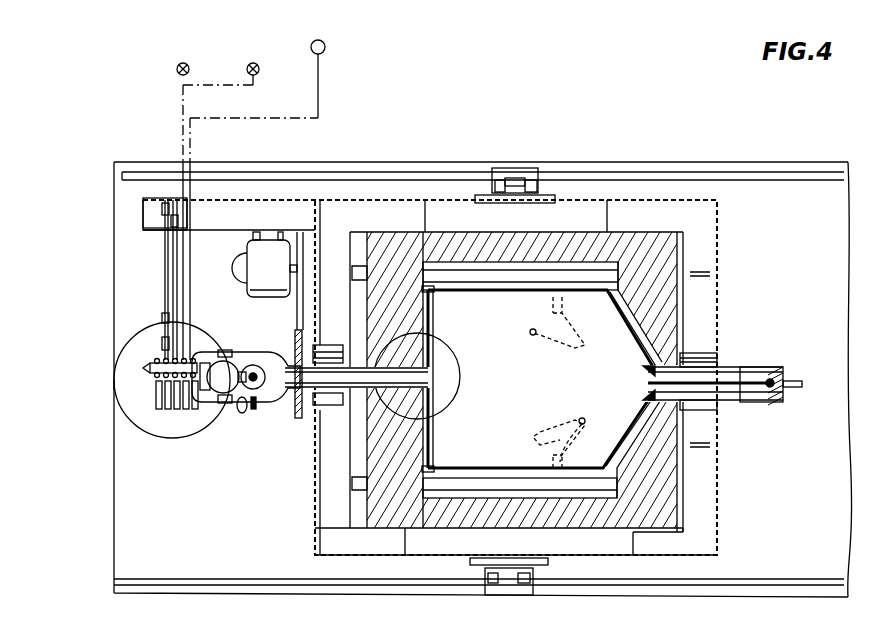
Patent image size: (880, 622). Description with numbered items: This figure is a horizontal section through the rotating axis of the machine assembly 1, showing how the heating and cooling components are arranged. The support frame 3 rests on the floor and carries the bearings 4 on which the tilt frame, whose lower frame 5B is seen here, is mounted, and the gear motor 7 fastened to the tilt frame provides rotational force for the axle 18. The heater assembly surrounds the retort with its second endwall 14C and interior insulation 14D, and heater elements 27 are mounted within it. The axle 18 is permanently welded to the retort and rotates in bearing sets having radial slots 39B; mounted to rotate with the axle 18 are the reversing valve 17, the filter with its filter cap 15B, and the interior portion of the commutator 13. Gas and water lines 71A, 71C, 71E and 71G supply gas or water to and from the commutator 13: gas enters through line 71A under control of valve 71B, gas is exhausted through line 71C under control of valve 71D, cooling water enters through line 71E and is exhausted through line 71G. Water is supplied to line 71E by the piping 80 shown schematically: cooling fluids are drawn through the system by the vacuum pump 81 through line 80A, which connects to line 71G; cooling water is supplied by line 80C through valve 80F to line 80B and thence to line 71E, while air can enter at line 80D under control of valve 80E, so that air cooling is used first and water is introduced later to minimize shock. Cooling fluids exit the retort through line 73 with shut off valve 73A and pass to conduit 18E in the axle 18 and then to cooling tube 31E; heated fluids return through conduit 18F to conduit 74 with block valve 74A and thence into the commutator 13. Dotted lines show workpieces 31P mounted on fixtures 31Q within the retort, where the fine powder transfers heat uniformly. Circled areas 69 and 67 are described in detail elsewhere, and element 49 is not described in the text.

The machine assembly 1 is at (636, 198).
The support frame 3 is at (730, 163).
The bearings 4 is at (524, 180).
The lower frame 5B is at (712, 538).
The gear motor 7 is at (266, 240).
The commutator 13 is at (150, 369).
The second endwall 14C is at (680, 298).
The interior insulation 14D is at (662, 257).
The filter cap 15B is at (217, 392).
The reversing valve 17 is at (262, 402).
The axle 18 is at (372, 352).
The conduit 18E is at (430, 333).
The conduit 18F is at (433, 415).
The heater elements 27 is at (573, 280).
The cooling tube 31E is at (433, 315).
The workpieces 31P is at (562, 422).
The fixtures 31Q is at (584, 420).
The radial slot 39B is at (713, 360).
The bearing housing 49 is at (773, 400).
The circled area 67 is at (388, 420).
The circled area 69 is at (110, 375).
The gas line 71A is at (165, 247).
The valve 71B is at (143, 200).
The gas exhaust line 71C is at (172, 260).
The valve 71D is at (176, 200).
The cooling water inlet line 71E is at (178, 278).
The cooling water exhaust line 71G is at (188, 292).
The line 73 is at (255, 352).
The shut off valve 73A is at (248, 352).
The conduit 74 is at (246, 402).
The block valve 74A is at (235, 402).
The piping 80 is at (410, 88).
The line 80A is at (318, 118).
The line 80B is at (181, 118).
The line 80C is at (181, 62).
The line 80D is at (256, 62).
The valve 80E is at (258, 75).
The valve 80F is at (188, 62).
The vacuum pump 81 is at (325, 47).